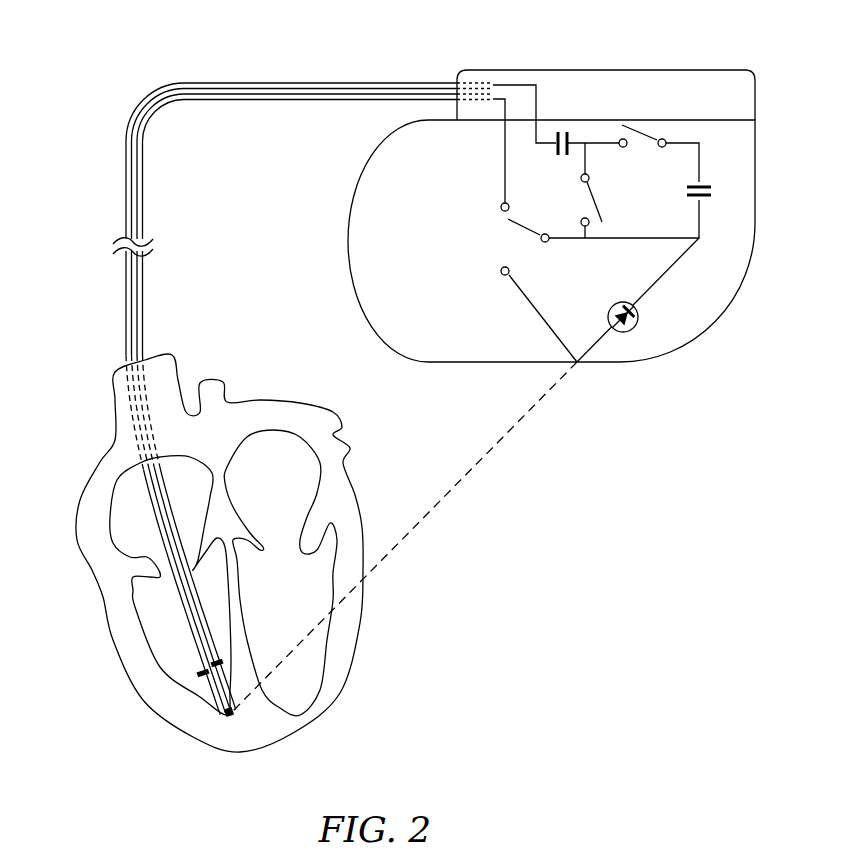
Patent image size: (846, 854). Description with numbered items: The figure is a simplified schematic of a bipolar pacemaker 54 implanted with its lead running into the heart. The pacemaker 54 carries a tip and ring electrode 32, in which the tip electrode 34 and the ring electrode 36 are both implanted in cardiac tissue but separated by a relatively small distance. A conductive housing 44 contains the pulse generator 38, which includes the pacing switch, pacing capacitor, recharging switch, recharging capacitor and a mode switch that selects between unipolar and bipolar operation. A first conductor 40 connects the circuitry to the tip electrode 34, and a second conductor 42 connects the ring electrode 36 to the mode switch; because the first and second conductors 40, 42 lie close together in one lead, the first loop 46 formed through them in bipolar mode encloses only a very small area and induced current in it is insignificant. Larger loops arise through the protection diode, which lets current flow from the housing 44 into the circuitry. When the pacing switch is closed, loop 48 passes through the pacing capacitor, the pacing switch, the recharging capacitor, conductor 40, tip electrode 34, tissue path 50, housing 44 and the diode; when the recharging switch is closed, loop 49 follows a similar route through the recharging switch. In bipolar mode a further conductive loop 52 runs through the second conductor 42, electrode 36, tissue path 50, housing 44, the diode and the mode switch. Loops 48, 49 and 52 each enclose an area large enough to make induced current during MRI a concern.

The tip and ring electrode 32 is at (175, 704).
The tip electrode 34 is at (200, 672).
The ring electrode 36 is at (233, 715).
The pulse generator 38 is at (568, 233).
The first conductor 40 is at (439, 377).
The second conductor 42 is at (148, 137).
The housing 44 is at (660, 362).
The first loop 46 is at (155, 98).
The loop 48 is at (177, 88).
The loop 49 is at (335, 83).
The tissue path 50 is at (478, 466).
The conductive loop 52 is at (195, 105).
The bipolar pacemaker 54 is at (597, 540).